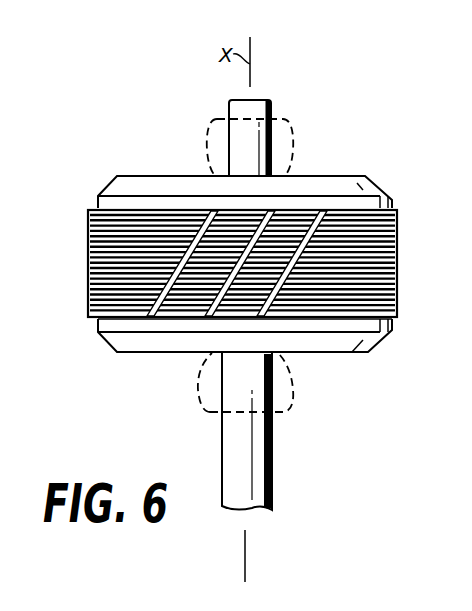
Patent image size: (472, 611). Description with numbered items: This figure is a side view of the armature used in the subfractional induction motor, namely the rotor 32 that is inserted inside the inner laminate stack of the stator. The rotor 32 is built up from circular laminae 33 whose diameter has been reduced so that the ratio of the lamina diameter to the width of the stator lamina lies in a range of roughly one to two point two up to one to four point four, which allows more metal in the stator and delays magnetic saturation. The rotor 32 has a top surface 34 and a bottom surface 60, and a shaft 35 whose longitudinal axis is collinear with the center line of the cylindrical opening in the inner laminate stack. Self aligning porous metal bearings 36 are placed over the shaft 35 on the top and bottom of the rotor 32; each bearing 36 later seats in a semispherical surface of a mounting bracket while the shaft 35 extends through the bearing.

The rotor 32 is at (249, 229).
The circular lamina 33 is at (88, 213).
The top surface 34 is at (160, 176).
The shaft 35 is at (262, 100).
The self aligning porous metal bearing 36 is at (292, 163).
The bottom surface 60 is at (341, 355).